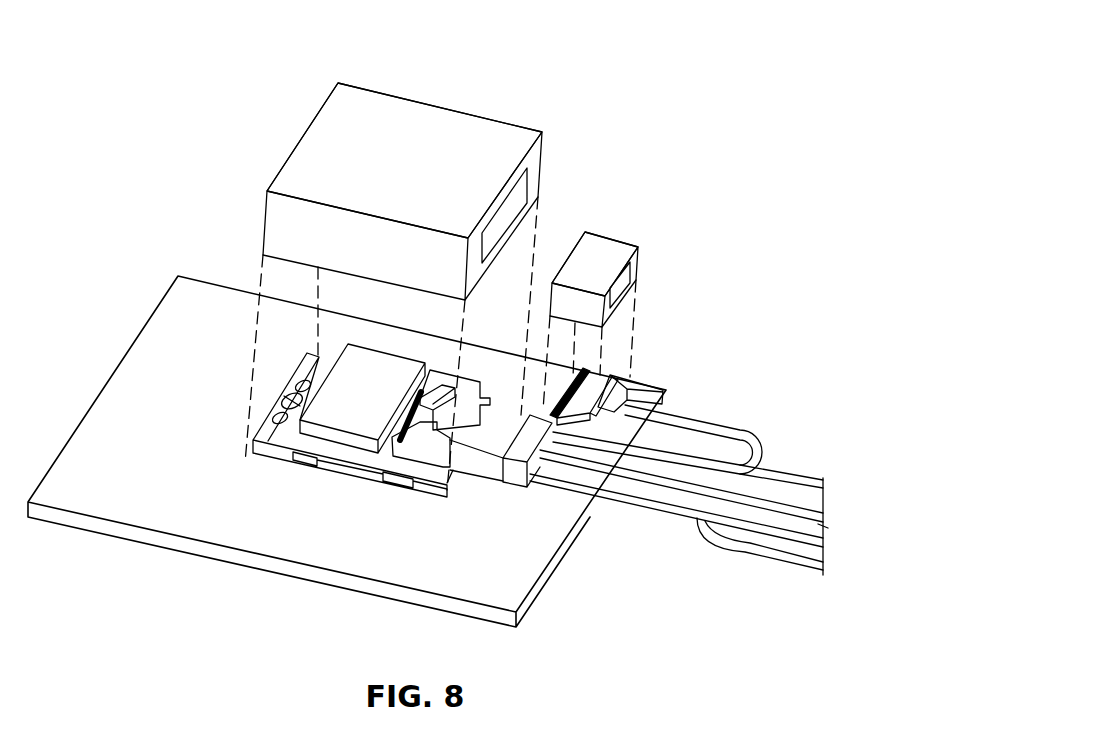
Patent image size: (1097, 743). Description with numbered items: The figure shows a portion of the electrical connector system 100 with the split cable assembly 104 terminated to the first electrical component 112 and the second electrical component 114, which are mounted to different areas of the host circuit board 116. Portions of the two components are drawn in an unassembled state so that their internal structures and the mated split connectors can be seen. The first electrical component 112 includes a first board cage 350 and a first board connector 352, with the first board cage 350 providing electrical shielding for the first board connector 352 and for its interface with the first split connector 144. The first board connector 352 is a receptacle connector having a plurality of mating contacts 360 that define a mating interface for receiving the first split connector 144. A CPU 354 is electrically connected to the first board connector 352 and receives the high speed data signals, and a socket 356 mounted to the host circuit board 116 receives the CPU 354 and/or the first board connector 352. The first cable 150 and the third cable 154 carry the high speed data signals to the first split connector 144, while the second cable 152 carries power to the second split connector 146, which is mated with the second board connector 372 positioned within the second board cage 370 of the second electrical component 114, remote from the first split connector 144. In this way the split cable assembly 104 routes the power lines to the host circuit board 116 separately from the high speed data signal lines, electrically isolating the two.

The electrical connector system 100 is at (229, 121).
The first electrical component 112 is at (408, 82).
The first board cage 350 is at (439, 128).
The second electrical component 114 is at (622, 224).
The second board cage 370 is at (617, 252).
The mating contacts 360 is at (407, 400).
The second board connector 372 is at (602, 372).
The second split connector 146 is at (615, 397).
The second cable 152 is at (744, 448).
The split cable assembly 104 is at (807, 411).
The third cable 154 is at (770, 488).
The first cable 150 is at (690, 507).
The host circuit board 116 is at (522, 582).
The socket 356 is at (295, 453).
The CPU 354 is at (338, 445).
The first board connector 352 is at (420, 455).
The first split connector 144 is at (488, 465).